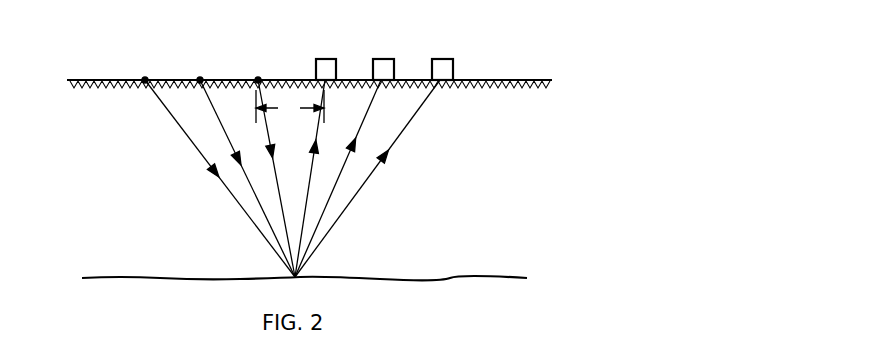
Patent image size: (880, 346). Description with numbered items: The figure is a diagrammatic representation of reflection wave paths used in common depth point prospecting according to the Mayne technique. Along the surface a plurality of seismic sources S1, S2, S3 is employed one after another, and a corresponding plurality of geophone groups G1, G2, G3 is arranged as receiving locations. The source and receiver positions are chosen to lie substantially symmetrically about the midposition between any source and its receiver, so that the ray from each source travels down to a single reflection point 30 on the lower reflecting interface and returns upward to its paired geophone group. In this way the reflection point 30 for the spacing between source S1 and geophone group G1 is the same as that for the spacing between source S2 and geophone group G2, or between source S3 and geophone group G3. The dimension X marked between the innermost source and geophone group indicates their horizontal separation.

The first seismic source S1 is at (256, 76).
The second seismic source S2 is at (196, 76).
The third seismic source S3 is at (138, 73).
The first geophone group G1 is at (326, 59).
The second geophone group G2 is at (387, 59).
The third geophone group G3 is at (447, 59).
The reflection point 30 is at (300, 277).
The source-geophone spacing X is at (290, 106).